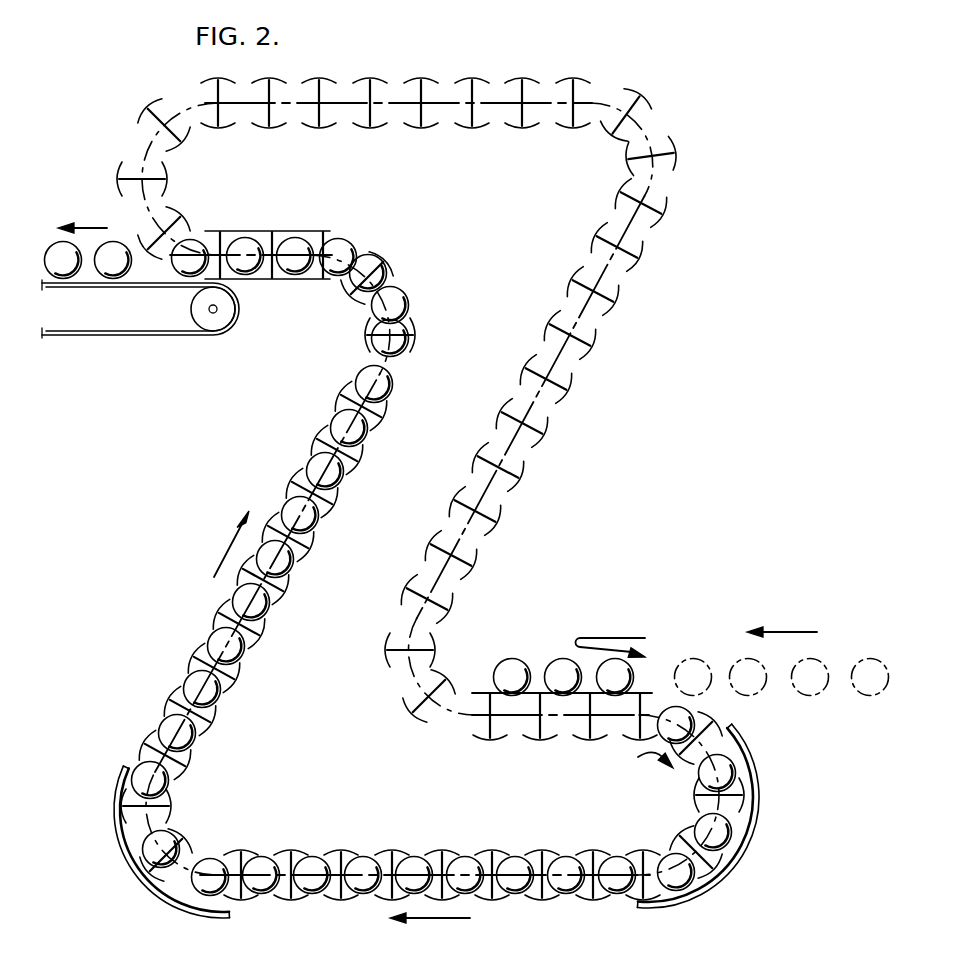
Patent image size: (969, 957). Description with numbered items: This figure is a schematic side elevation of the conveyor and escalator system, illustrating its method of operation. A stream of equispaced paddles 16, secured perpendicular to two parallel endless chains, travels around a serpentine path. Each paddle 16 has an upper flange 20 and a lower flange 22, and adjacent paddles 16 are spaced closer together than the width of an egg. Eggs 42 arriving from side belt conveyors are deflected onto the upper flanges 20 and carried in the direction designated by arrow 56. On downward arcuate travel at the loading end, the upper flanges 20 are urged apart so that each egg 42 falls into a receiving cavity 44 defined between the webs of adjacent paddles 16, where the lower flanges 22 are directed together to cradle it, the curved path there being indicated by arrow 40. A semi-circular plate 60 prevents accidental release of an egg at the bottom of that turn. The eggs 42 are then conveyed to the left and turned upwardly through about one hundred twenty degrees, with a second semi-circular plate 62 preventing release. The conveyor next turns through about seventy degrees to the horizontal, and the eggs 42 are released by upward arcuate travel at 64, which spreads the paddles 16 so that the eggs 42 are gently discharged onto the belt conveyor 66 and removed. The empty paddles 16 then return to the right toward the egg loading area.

The paddles 16 is at (450, 607).
The upper flanges 20 is at (448, 692).
The lower flanges 22 is at (584, 898).
The rotation direction arrow 40 is at (642, 757).
The eggs 42 is at (110, 279).
The receiving cavity 44 is at (738, 802).
The arrow 56 is at (612, 636).
The semi-circular plate 60 is at (747, 863).
The semi-circular plate 62 is at (168, 893).
The upward arcuate travel 64 is at (106, 175).
The belt conveyor 66 is at (176, 340).